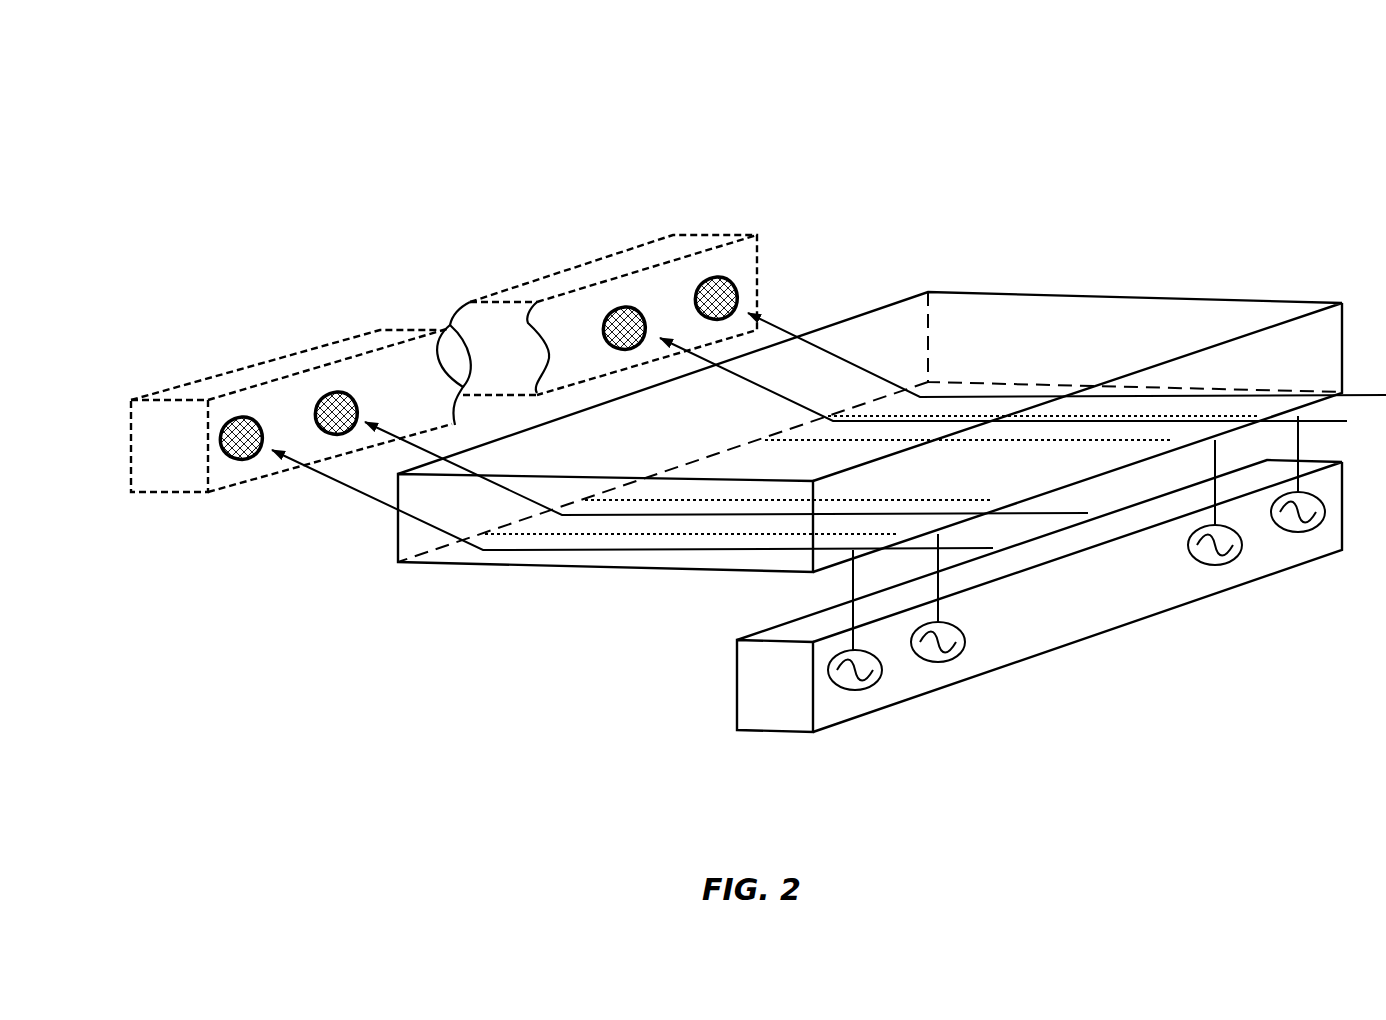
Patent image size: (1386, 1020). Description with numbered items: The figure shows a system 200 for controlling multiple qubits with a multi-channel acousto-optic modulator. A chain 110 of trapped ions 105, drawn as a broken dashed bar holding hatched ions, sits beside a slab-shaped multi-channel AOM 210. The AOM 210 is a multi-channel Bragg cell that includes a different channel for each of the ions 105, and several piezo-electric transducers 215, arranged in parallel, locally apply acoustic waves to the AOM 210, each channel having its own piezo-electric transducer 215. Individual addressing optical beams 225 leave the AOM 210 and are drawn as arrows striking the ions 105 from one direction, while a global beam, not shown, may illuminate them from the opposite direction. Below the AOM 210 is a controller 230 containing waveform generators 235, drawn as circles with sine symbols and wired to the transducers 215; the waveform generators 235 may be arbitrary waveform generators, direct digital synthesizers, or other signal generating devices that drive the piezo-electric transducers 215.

The system 200 is at (205, 87).
The ions 105 is at (229, 420).
The chain 110 is at (172, 493).
The multi-channel AOM 210 is at (1195, 297).
The piezo-electric transducers 215 is at (456, 554).
The individual addressing optical beams 225 is at (288, 458).
The controller 230 is at (1048, 653).
The waveform generators 235 is at (853, 690).